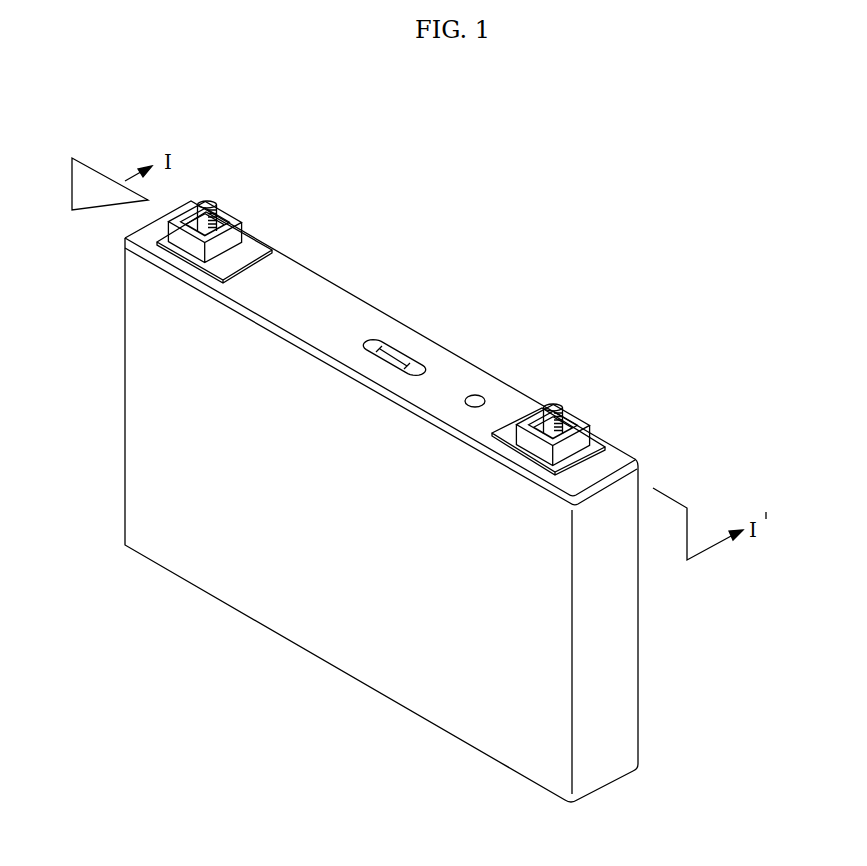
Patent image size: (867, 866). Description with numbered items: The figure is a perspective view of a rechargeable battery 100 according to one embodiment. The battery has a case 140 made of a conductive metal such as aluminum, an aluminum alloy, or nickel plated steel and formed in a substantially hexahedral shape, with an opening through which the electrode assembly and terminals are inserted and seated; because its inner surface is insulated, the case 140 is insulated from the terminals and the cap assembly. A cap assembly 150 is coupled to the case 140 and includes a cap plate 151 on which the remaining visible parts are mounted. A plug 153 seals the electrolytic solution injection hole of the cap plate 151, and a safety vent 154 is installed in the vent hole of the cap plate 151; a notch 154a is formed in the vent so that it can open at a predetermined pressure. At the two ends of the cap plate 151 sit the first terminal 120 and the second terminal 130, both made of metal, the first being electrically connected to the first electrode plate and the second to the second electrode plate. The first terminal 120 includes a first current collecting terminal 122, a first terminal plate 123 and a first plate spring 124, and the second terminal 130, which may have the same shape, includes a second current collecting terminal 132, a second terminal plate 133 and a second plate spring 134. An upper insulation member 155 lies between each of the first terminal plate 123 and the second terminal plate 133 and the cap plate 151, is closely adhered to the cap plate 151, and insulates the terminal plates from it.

The rechargeable battery 100 is at (652, 215).
The first terminal 120 is at (238, 186).
The first current collecting terminal 122 is at (208, 202).
The first terminal plate 123 is at (238, 219).
The first plate spring 124 is at (215, 215).
The second terminal 130 is at (586, 392).
The second current collecting terminal 132 is at (556, 405).
The second terminal plate 133 is at (587, 421).
The second plate spring 134 is at (567, 425).
The case 140 is at (327, 650).
The cap assembly 150 is at (360, 297).
The cap plate 151 is at (307, 284).
The plug 153 is at (473, 398).
The safety vent 154 is at (397, 343).
The notch 154a is at (401, 360).
The upper insulation member 155 is at (249, 253).